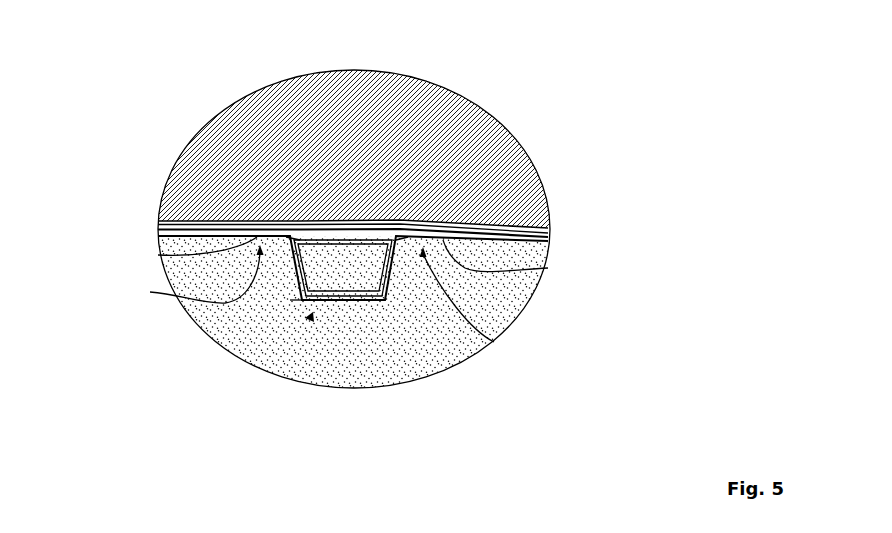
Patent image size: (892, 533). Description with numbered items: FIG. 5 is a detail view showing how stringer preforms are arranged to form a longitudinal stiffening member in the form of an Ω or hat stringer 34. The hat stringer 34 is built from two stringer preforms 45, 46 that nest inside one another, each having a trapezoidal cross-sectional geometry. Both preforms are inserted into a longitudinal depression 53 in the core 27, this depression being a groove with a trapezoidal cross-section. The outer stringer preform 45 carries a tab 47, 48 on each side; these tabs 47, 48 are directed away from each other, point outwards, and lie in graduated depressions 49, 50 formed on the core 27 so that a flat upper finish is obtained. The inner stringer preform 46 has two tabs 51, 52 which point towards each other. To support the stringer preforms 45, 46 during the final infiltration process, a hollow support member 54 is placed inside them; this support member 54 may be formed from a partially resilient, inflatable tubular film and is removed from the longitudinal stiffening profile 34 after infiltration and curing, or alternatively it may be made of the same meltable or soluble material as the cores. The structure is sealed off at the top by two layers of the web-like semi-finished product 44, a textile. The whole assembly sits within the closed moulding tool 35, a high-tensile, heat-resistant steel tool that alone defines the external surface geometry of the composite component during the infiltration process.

The core 27 is at (433, 336).
The hat stringer 34 is at (310, 318).
The moulding tool 35 is at (358, 162).
The web-like semi-finished product 44 is at (548, 234).
The outer stringer preform 45 is at (342, 299).
The inner stringer preform 46 is at (372, 299).
The tab 47 is at (158, 255).
The tab 48 is at (548, 268).
The graduated depression 49 is at (150, 292).
The graduated depression 50 is at (494, 342).
The tab 51 is at (300, 237).
The tab 52 is at (395, 240).
The longitudinal depression 53 is at (351, 272).
The hollow support member 54 is at (297, 300).